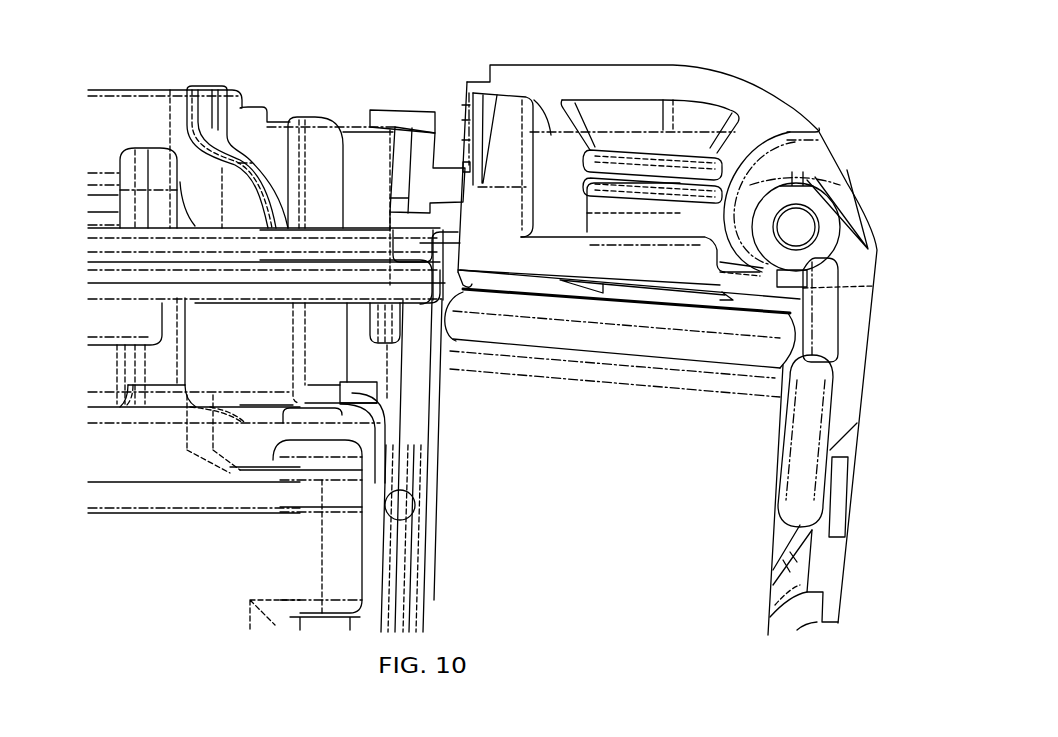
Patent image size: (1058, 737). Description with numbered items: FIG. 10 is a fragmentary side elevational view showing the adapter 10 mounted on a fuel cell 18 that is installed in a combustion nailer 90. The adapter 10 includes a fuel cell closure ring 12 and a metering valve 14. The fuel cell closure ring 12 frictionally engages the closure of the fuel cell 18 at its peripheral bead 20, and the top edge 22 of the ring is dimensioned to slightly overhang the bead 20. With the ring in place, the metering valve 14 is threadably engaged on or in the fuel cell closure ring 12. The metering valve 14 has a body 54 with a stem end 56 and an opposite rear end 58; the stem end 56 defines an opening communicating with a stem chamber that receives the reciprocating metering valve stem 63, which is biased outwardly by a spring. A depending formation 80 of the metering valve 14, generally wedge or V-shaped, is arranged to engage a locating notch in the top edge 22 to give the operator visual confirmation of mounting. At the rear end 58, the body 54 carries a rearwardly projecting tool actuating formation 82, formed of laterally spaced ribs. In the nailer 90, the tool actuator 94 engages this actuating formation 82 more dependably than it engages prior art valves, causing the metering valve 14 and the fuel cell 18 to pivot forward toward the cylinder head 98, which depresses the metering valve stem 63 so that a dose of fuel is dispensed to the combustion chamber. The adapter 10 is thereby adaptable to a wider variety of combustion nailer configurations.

The adapter 10 is at (612, 52).
The fuel cell closure ring 12 is at (526, 310).
The metering valve 14 is at (513, 112).
The fuel cell 18 is at (745, 502).
The peripheral bead 20 is at (770, 335).
The top edge 22 is at (747, 302).
The body 54 is at (640, 150).
The stem end 56 is at (462, 110).
The rear end 58 is at (722, 167).
The metering valve stem 63 is at (451, 186).
The depending formation 80 is at (465, 286).
The tool actuating formation 82 is at (757, 286).
The combustion nailer 90 is at (290, 96).
The tool actuator 94 is at (803, 200).
The cylinder head 98 is at (358, 165).